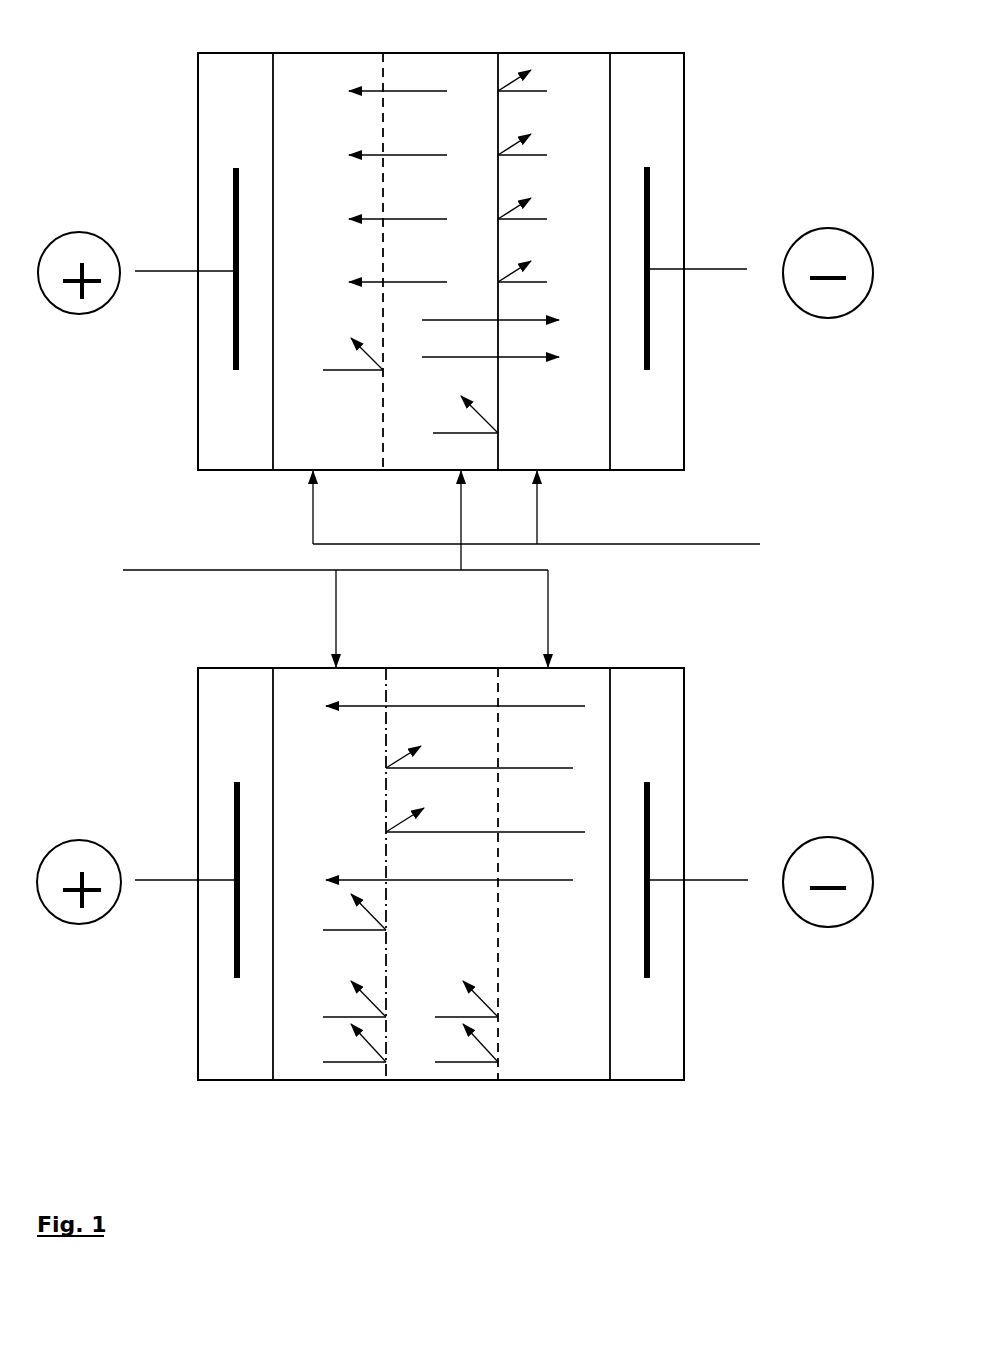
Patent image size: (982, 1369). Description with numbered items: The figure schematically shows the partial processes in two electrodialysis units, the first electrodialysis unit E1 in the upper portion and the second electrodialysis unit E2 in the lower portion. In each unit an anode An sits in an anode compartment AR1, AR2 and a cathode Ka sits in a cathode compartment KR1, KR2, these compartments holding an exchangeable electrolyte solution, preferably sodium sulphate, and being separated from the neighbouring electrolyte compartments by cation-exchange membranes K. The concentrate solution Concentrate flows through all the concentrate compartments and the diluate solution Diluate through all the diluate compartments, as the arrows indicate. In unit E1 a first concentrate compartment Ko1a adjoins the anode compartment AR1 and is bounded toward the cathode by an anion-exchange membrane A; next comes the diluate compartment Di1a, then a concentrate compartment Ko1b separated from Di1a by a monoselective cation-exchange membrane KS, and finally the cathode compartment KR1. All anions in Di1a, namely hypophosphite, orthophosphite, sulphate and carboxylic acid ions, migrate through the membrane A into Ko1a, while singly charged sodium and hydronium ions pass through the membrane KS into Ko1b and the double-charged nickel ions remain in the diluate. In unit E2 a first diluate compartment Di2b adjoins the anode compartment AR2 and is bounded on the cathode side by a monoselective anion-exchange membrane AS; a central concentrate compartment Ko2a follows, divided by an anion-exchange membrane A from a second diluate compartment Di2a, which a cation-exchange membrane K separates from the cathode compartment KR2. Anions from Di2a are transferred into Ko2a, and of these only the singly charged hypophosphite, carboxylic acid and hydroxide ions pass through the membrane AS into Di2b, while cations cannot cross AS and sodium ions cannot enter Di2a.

The first electrodialysis unit E1 is at (517, 261).
The second electrodialysis unit E2 is at (523, 874).
The cation-exchange membrane K is at (441, 553).
The anion-exchange membrane A is at (439, 553).
The monoselective cation-exchange membrane KS is at (497, 248).
The monoselective anion-exchange membrane AS is at (383, 860).
The anode An is at (103, 574).
The cathode Ka is at (795, 575).
The anode compartment AR1 is at (192, 336).
The cathode compartment KR1 is at (686, 335).
The first concentrate compartment Ko1a is at (344, 441).
The diluate compartment Di1a is at (483, 433).
The concentrate compartment Ko1b is at (552, 302).
The anode compartment AR2 is at (196, 953).
The cathode compartment KR2 is at (686, 953).
The first diluate compartment Di2b is at (444, 899).
The concentrate compartment Ko2a is at (485, 931).
The second diluate compartment Di2a is at (560, 899).
The concentrate solution Concentrate is at (599, 545).
The diluate solution Diluate is at (292, 613).